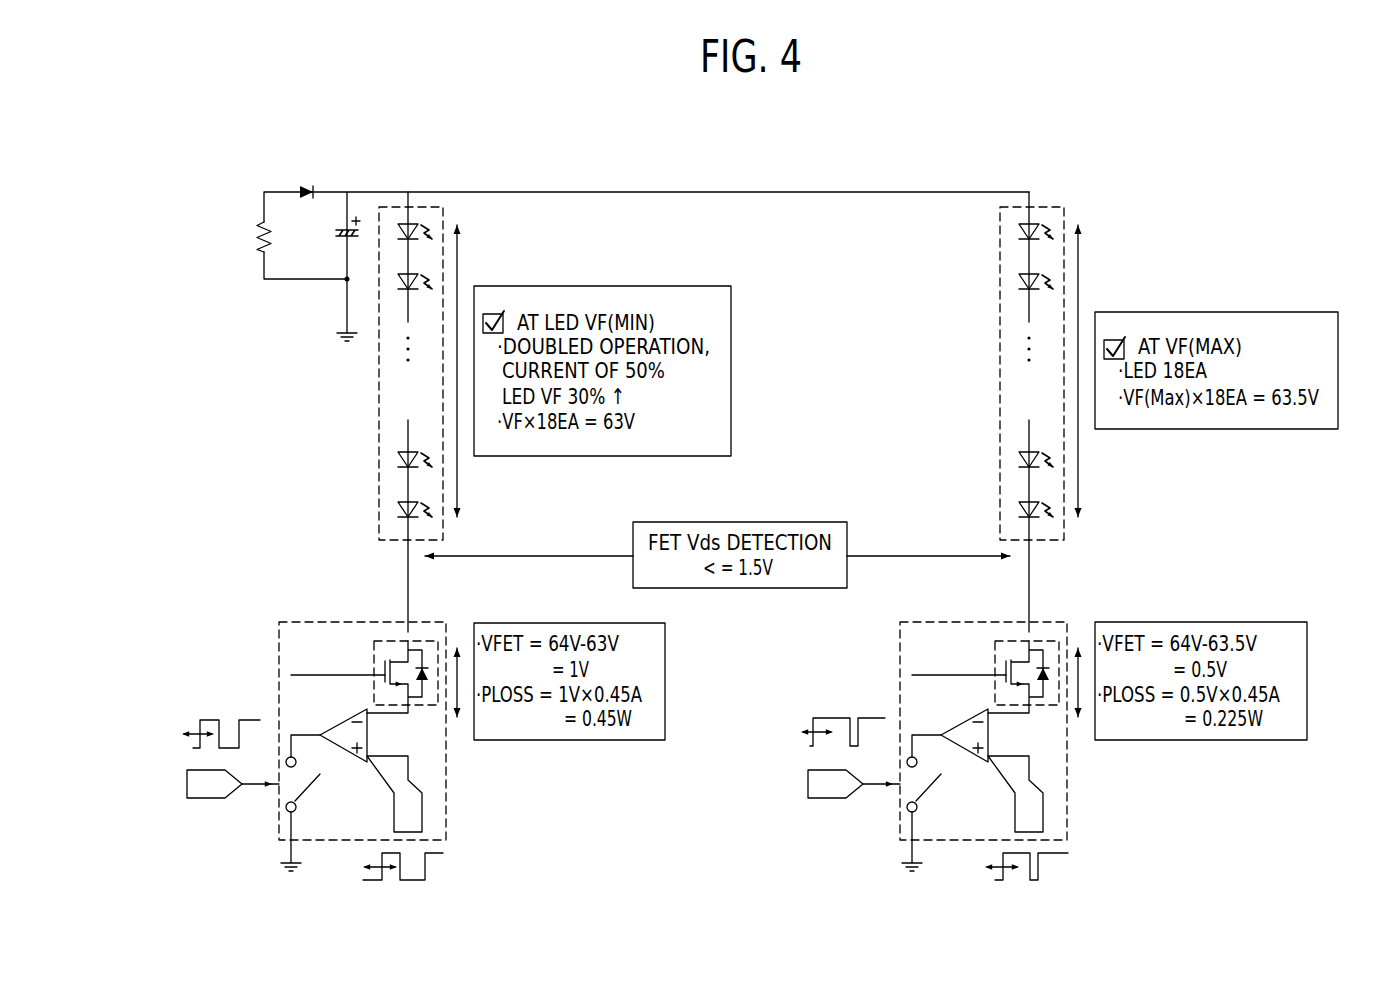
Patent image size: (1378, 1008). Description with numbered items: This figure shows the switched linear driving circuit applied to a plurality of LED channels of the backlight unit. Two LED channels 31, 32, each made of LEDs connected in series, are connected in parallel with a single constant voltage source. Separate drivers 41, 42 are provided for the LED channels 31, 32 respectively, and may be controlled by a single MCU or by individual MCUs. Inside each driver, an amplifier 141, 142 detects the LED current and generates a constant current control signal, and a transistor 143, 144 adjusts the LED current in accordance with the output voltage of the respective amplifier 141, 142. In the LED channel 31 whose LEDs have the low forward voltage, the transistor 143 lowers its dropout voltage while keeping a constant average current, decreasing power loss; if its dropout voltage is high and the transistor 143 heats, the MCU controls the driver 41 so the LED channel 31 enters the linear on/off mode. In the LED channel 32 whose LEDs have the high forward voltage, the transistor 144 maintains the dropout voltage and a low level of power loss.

The LED channel 31 is at (378, 418).
The LED channel 32 is at (1000, 418).
The driver 41 is at (314, 751).
The driver 42 is at (934, 751).
The amplifier 141 is at (345, 750).
The amplifier 142 is at (966, 750).
The transistor 143 is at (374, 652).
The transistor 144 is at (995, 652).